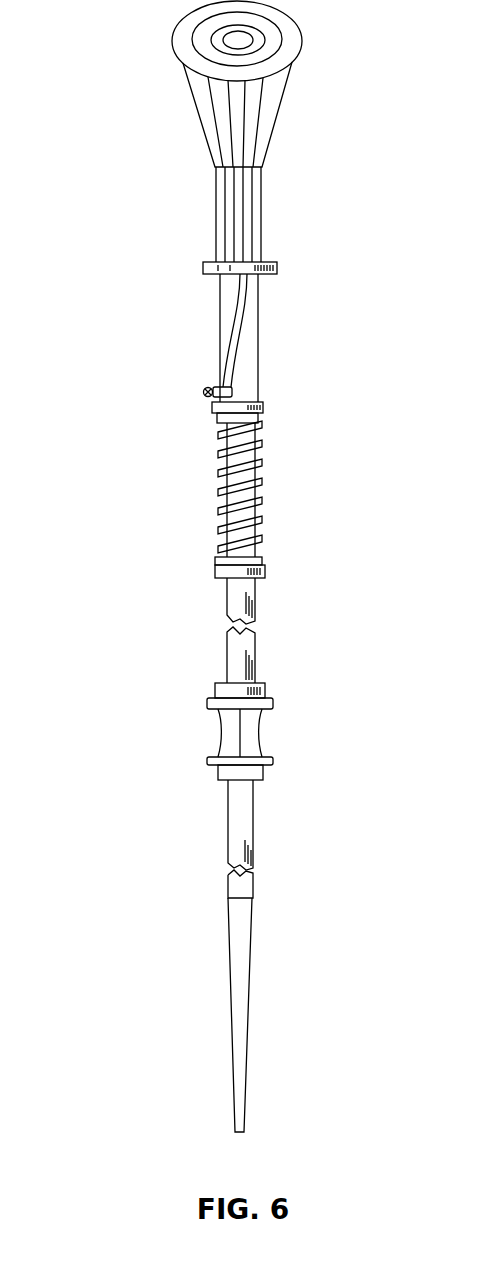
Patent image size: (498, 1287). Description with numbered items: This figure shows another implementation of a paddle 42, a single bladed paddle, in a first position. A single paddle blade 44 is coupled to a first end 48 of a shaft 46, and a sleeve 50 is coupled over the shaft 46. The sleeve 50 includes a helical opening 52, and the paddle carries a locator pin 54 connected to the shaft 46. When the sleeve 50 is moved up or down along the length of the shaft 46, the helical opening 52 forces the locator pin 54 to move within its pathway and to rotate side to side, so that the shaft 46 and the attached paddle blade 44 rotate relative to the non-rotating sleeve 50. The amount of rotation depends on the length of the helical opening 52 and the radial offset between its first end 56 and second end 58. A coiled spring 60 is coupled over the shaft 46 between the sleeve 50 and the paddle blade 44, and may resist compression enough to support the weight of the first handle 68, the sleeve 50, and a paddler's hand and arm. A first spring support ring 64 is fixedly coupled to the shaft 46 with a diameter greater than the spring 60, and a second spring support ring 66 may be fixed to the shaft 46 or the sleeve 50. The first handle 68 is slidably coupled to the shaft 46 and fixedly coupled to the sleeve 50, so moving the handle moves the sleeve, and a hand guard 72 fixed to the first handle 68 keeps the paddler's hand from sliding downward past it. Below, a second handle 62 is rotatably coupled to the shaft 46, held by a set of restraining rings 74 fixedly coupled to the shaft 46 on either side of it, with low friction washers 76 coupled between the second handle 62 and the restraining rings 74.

The paddle 42 is at (113, 144).
The paddle blade 44 is at (240, 1000).
The shaft 46 is at (250, 822).
The first end 48 is at (233, 887).
The sleeve 50 is at (250, 357).
The helical opening 52 is at (245, 328).
The locator pin 54 is at (217, 385).
The first end of the helical opening 56 is at (248, 296).
The second end of the helical opening 58 is at (232, 386).
The spring 60 is at (262, 500).
The second handle 62 is at (252, 733).
The first spring support ring 64 is at (262, 570).
The second spring support ring 66 is at (212, 403).
The first handle 68 is at (268, 117).
The hand guard 72 is at (203, 266).
The restraining rings 74 is at (265, 690).
The low friction washers 76 is at (207, 704).